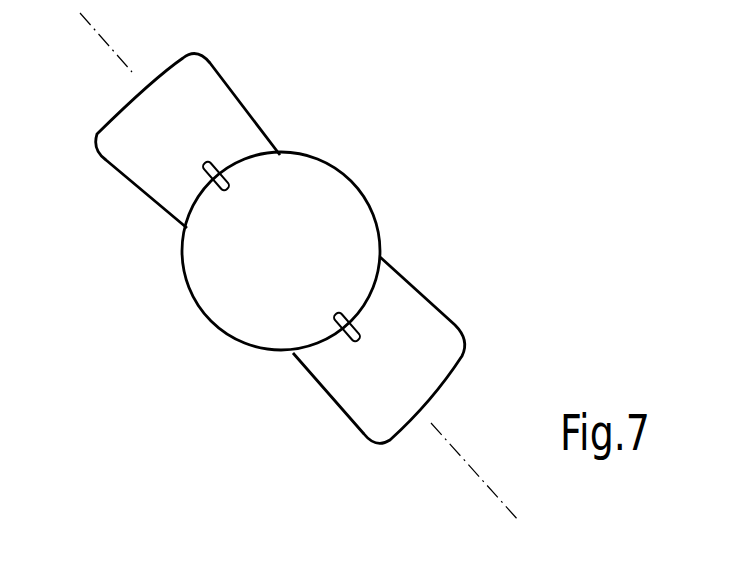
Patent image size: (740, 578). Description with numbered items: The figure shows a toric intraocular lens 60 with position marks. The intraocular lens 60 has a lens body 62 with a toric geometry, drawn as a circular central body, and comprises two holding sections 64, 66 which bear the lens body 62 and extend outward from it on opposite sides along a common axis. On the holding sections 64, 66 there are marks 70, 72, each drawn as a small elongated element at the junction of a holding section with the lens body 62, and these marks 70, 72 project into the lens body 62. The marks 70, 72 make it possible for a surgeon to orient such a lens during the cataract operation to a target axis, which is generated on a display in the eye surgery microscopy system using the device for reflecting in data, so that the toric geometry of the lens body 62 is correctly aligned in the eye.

The toric intraocular lens 60 is at (474, 104).
The lens body 62 is at (343, 195).
The holding section 64 is at (220, 98).
The holding section 66 is at (440, 333).
The mark 70 is at (223, 172).
The mark 72 is at (350, 332).